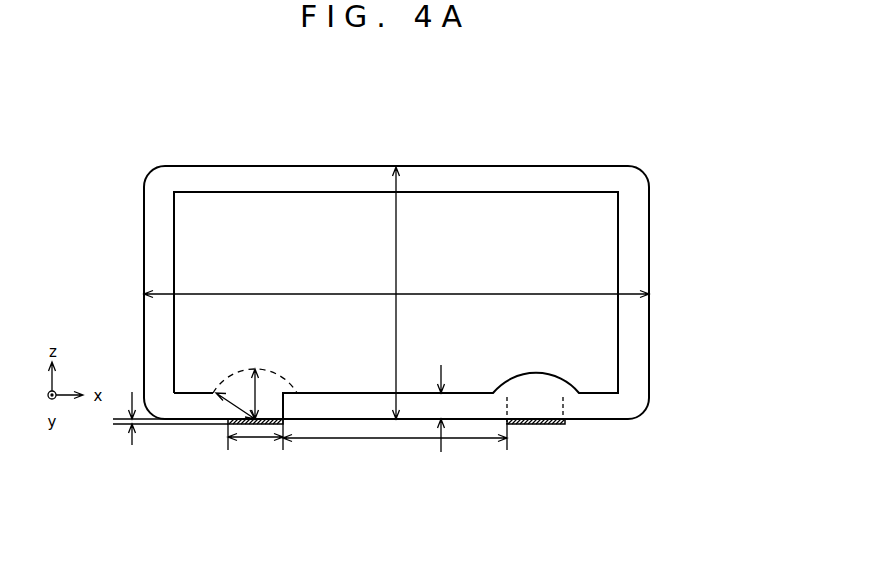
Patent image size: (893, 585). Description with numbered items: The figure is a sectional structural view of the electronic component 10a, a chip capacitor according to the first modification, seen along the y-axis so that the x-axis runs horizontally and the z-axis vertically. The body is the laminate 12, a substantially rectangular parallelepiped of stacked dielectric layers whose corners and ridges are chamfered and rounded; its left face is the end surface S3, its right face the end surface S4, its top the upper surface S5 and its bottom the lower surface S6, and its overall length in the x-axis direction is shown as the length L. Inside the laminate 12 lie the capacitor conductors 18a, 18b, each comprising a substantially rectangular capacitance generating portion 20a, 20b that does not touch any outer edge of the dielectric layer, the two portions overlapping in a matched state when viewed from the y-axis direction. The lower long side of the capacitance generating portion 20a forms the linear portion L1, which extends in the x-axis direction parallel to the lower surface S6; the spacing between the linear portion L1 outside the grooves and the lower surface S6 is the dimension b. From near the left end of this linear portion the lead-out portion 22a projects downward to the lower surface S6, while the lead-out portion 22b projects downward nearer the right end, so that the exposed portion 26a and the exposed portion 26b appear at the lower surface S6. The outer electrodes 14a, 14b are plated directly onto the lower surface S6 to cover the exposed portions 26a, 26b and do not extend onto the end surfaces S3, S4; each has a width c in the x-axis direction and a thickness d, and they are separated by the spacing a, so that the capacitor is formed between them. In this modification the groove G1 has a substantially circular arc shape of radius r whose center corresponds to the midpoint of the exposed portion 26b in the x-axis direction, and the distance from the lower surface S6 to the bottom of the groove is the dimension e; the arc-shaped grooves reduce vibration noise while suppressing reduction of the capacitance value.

The electronic component 10a is at (422, 280).
The laminate 12 is at (422, 302).
The outer electrode 14a is at (201, 453).
The outer electrode 14b is at (541, 453).
The capacitor conductor 18a is at (468, 297).
The capacitor conductor 18b is at (468, 327).
The capacitance generating portion 20a is at (396, 305).
The capacitance generating portion 20b is at (396, 305).
The lead-out portion 22a is at (388, 396).
The lead-out portion 22b is at (265, 411).
The exposed portion 26a is at (249, 427).
The exposed portion 26b is at (546, 428).
The groove G1 is at (543, 385).
The end surface S3 is at (144, 261).
The end surface S4 is at (649, 341).
The upper surface S5 is at (397, 166).
The lower surface S6 is at (375, 424).
The length of the electronic component L is at (396, 281).
The linear portion L1 is at (355, 393).
The thickness of body T is at (407, 293).
The spacing between the outer electrodes a is at (395, 441).
The spacing between linear portion and lower surface b is at (450, 408).
The width of the outer electrode c is at (255, 439).
The thickness of the outer electrode d is at (133, 422).
The distance from lower surface to groove bottom e is at (262, 394).
The radius r is at (235, 400).